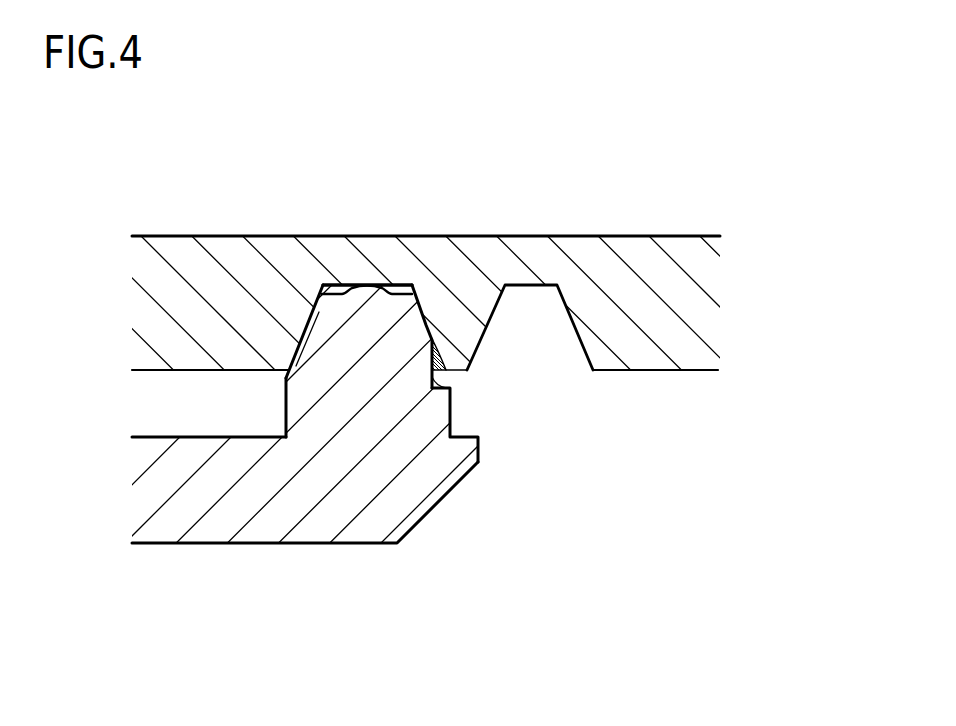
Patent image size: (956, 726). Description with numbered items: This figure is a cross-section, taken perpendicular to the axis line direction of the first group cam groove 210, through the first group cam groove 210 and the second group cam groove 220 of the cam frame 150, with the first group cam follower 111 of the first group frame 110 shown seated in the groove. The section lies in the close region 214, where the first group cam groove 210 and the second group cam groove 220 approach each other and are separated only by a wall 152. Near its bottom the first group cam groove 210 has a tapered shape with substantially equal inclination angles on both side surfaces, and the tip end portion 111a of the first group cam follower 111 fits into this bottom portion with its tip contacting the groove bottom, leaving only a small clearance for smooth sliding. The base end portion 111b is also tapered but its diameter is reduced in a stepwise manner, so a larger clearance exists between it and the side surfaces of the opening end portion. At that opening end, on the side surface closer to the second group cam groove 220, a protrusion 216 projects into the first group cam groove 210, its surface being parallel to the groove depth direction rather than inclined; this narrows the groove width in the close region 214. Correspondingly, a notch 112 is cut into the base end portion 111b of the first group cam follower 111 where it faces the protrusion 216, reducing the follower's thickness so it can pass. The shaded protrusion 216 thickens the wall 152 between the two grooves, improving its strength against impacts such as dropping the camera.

The first group frame 110 is at (335, 403).
The first group cam follower 111 is at (232, 305).
The tip end portion 111a is at (341, 243).
The base end portion 111b is at (300, 352).
The notch 112 is at (442, 392).
The cam frame 150 is at (436, 245).
The wall 152 is at (440, 370).
The first group cam groove 210 is at (393, 215).
The close region 214 is at (393, 284).
The protrusion 216 is at (436, 376).
The second group cam groove 220 is at (533, 285).